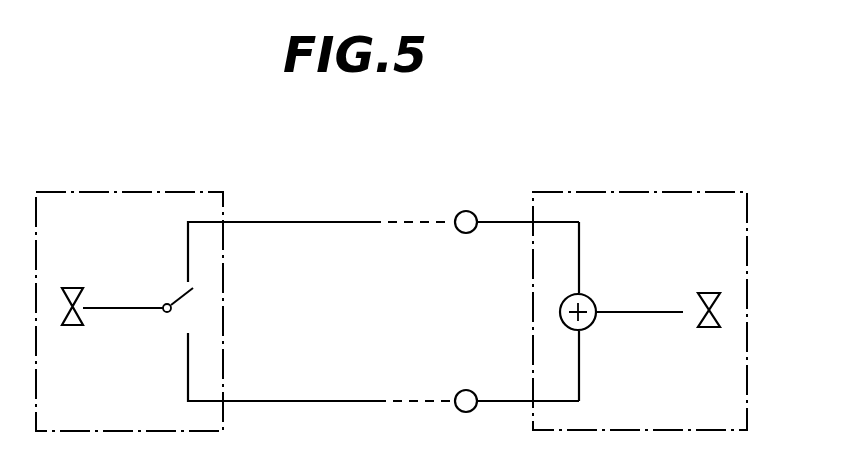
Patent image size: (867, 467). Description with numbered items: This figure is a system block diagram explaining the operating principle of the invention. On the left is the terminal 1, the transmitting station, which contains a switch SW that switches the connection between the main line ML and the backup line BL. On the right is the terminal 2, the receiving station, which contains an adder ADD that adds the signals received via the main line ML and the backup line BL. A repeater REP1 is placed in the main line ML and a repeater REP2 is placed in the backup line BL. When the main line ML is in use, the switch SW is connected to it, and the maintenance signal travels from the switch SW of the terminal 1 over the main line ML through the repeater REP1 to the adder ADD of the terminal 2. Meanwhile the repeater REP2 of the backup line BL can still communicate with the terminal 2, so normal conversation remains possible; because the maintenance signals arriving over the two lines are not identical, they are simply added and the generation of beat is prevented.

The terminal 1 is at (183, 192).
The terminal 2 is at (652, 192).
The switch SW is at (162, 288).
The main line ML is at (355, 224).
The backup line BL is at (323, 402).
The repeater REP1 is at (461, 205).
The repeater REP2 is at (470, 381).
The adder ADD is at (592, 326).